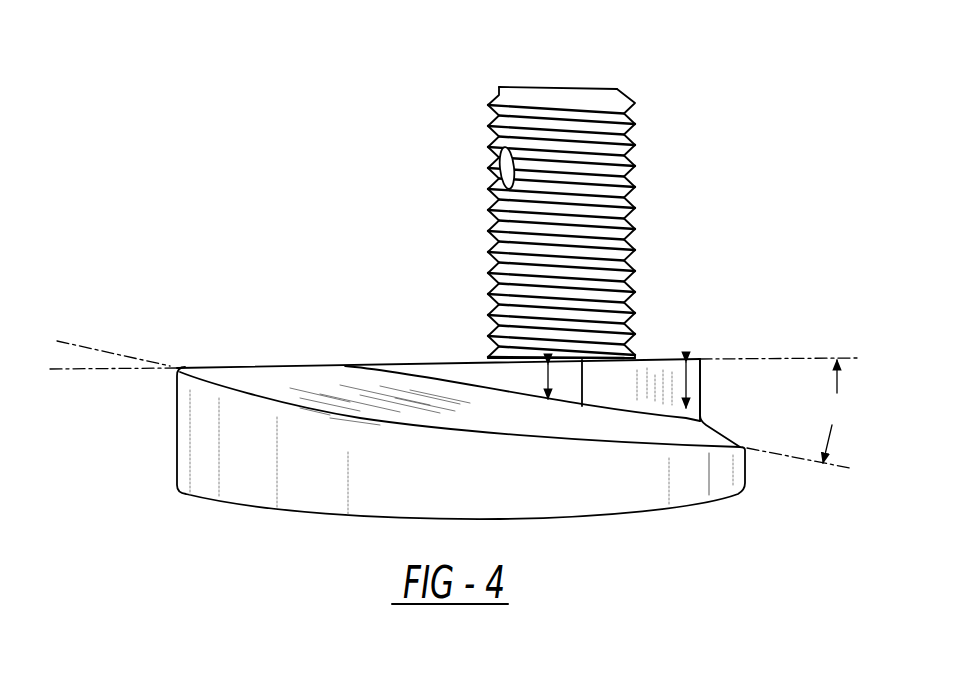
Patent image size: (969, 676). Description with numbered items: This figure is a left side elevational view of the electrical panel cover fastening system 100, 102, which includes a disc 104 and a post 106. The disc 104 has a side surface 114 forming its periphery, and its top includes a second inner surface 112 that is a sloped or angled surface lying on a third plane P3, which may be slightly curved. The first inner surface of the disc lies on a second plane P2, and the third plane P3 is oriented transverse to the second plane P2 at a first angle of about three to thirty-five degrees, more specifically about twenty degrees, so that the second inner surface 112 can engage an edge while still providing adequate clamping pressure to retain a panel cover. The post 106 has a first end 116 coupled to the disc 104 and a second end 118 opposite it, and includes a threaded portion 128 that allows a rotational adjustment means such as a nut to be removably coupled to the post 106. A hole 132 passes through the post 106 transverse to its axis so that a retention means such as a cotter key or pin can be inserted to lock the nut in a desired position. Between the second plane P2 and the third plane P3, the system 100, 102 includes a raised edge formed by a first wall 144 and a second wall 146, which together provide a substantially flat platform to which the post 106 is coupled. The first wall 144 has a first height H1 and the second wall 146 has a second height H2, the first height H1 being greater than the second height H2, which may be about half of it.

The electrical panel cover fastening system 100 is at (207, 157).
The electrical panel cover fastening system 102 is at (439, 297).
The disc 104 is at (177, 433).
The post 106 is at (630, 97).
The second inner surface 112 is at (308, 377).
The side surface 114 is at (252, 475).
The first end 116 is at (637, 357).
The second end 118 is at (593, 84).
The threaded portion 128 is at (632, 167).
The hole 132 is at (496, 162).
The first wall 144 is at (619, 399).
The second wall 146 is at (530, 395).
The first height H1 is at (690, 387).
The second height H2 is at (546, 383).
The second plane P2 is at (451, 366).
The third plane P3 is at (450, 404).